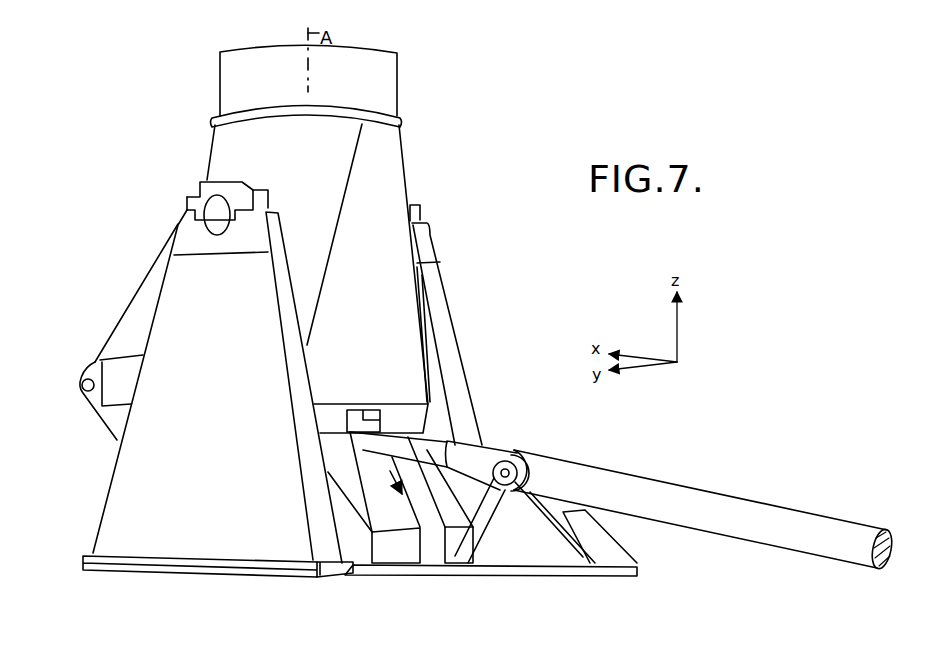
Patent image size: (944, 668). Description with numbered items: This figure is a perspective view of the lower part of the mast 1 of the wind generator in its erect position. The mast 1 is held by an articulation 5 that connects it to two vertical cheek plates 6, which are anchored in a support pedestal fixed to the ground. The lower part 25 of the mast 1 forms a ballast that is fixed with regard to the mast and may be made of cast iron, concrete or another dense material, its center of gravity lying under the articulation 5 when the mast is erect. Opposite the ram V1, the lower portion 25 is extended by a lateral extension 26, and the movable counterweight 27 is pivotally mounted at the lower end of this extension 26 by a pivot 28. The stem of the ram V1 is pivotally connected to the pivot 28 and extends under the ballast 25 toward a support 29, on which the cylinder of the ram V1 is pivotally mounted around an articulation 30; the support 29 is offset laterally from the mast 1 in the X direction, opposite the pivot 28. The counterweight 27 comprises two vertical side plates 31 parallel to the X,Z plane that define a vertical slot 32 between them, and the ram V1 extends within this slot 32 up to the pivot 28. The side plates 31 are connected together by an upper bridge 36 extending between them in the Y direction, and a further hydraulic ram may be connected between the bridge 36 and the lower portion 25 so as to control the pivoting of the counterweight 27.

The mast 1 is at (358, 92).
The lower part of the mast 25 is at (355, 202).
The articulation 5 is at (216, 207).
The vertical cheek plates 6 is at (202, 522).
The lateral extension 26 is at (145, 310).
The pivot 28 is at (88, 388).
The movable counterweight 27 is at (108, 433).
The upper bridge 36 is at (368, 417).
The vertical slot 32 is at (391, 471).
The vertical side plates 31 is at (457, 540).
The articulation 30 is at (522, 465).
The support 29 is at (515, 543).
The ram V1 is at (678, 510).